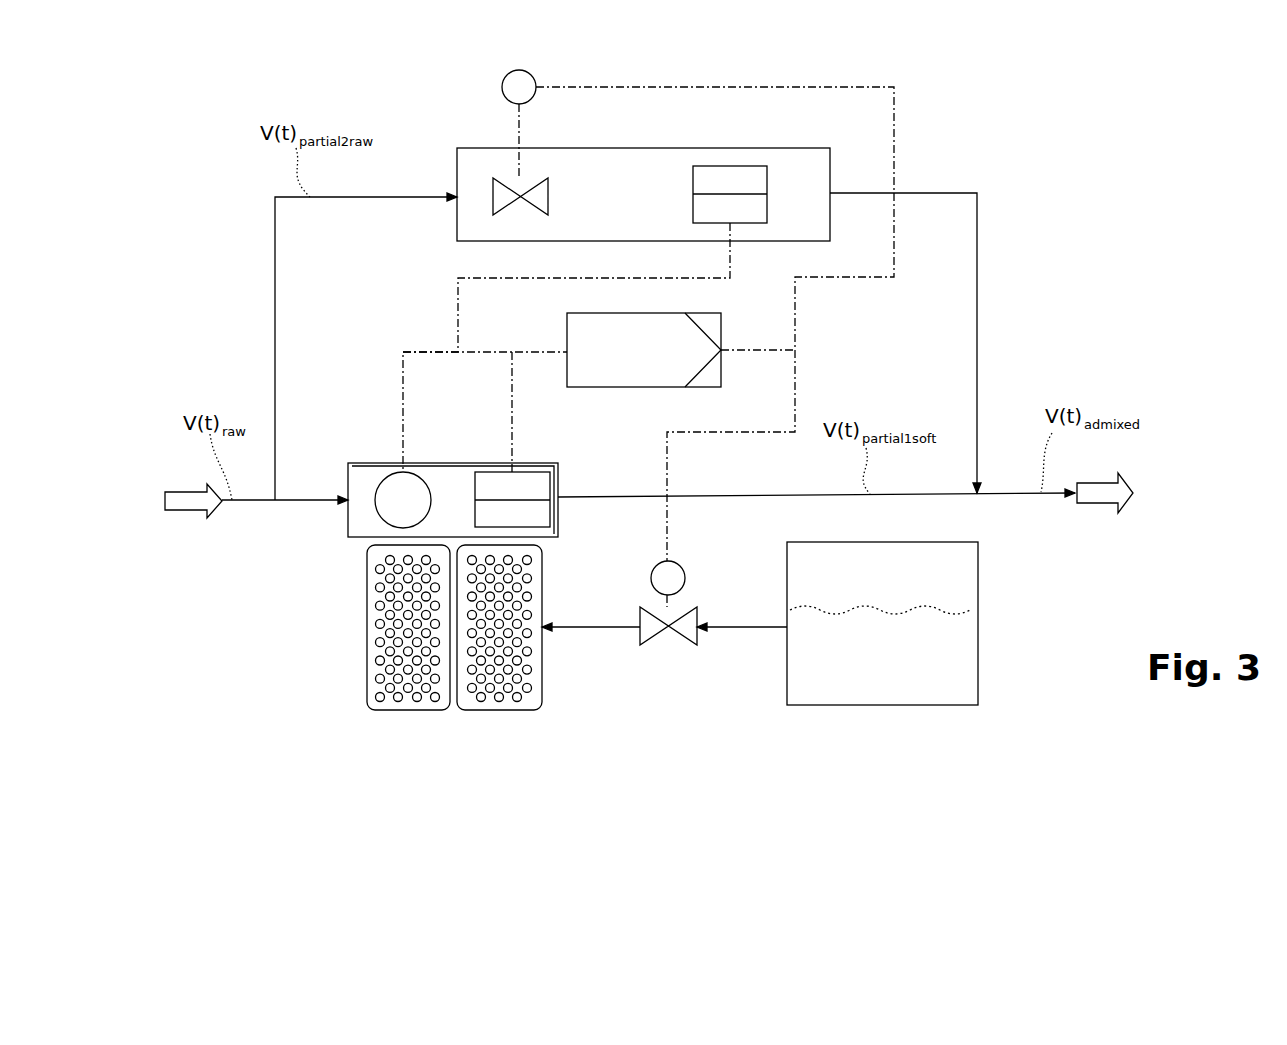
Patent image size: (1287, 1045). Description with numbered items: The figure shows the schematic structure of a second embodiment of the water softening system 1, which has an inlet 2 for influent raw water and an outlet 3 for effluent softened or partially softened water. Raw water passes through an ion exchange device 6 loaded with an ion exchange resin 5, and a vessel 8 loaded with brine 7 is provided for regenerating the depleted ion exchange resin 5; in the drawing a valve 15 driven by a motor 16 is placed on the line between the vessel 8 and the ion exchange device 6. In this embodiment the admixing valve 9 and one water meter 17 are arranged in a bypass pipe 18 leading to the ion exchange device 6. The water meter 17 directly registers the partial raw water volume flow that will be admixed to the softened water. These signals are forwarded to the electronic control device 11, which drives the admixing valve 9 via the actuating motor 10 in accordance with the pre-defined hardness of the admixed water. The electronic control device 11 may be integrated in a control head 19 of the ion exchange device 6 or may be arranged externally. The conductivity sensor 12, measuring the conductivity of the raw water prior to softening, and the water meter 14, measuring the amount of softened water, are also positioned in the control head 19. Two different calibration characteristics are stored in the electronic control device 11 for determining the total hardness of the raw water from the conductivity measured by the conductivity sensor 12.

The water softening system 1 is at (264, 711).
The inlet 2 is at (236, 502).
The outlet 3 is at (1009, 491).
The ion exchange resin 5 is at (367, 668).
The ion exchange device 6 is at (367, 612).
The brine 7 is at (970, 662).
The vessel 8 is at (978, 560).
The admixing valve 9 is at (492, 183).
The actuating motor 10 is at (502, 87).
The electronic control device 11 is at (567, 322).
The conductivity sensor 12 is at (348, 518).
The water meter 14 is at (558, 466).
The regenerant valve 15 is at (697, 637).
The regenerant valve motor 16 is at (685, 578).
The water meter 17 is at (767, 205).
The bypass pipe 18 is at (275, 368).
The control head 19 is at (558, 524).